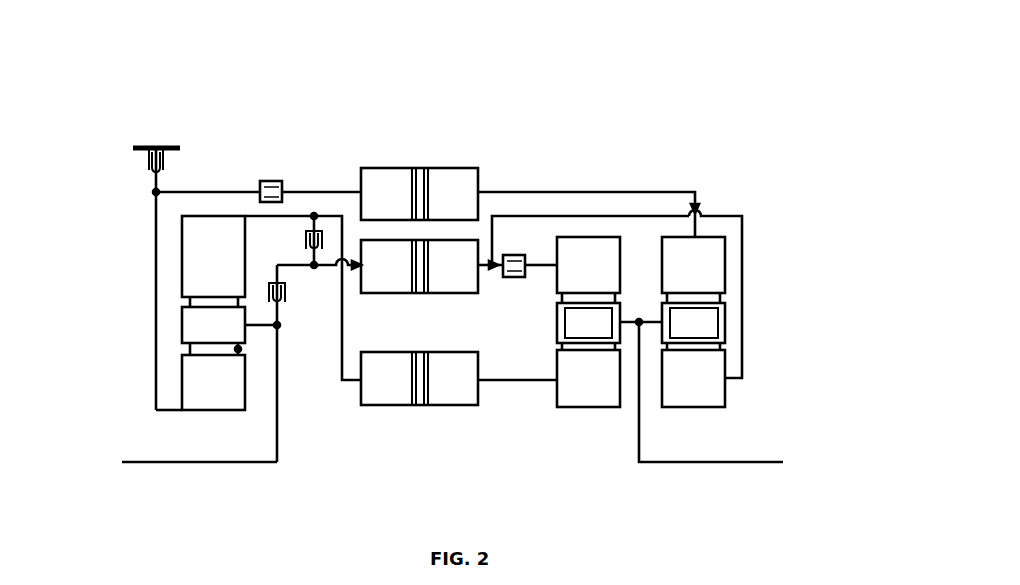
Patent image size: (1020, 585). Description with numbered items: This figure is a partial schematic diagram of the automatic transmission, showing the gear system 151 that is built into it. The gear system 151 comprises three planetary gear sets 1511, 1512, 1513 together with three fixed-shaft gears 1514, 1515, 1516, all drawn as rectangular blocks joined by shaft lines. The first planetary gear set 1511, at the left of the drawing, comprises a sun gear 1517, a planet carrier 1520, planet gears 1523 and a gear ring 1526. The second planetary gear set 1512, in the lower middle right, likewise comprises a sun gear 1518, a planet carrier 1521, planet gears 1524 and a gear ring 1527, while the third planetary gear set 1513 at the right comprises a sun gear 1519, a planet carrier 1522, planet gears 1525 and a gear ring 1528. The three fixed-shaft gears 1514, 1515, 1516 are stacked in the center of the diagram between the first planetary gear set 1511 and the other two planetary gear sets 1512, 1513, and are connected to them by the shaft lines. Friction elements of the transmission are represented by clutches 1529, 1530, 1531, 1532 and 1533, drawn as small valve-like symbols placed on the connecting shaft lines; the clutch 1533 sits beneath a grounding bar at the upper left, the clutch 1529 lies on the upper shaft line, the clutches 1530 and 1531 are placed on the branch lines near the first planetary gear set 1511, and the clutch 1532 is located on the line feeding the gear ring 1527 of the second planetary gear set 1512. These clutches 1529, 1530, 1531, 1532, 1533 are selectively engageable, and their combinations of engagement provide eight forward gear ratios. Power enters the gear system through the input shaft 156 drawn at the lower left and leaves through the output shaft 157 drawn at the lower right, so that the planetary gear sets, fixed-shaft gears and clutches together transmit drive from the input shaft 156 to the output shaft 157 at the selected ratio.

The gear system 151 is at (446, 269).
The clutch 1533 is at (135, 180).
The gear ring 1526 is at (449, 261).
The clutch 1529 is at (283, 157).
The clutch 1530 is at (287, 242).
The clutch 1531 is at (301, 363).
The clutch 1532 is at (526, 250).
The fixed-shaft gear 1514 is at (419, 161).
The fixed-shaft gear 1515 is at (420, 291).
The fixed-shaft gear 1516 is at (419, 410).
The planetary gear set 1511 is at (214, 336).
The planet carrier 1520 is at (187, 279).
The planet gear 1523 is at (260, 342).
The sun gear 1517 is at (205, 406).
The input shaft 156 is at (187, 485).
The planetary gear set 1512 is at (548, 302).
The gear ring 1527 is at (588, 207).
The planet carrier 1521 is at (548, 318).
The planet gear 1524 is at (551, 355).
The sun gear 1518 is at (559, 395).
The planetary gear set 1513 is at (738, 287).
The gear ring 1528 is at (705, 207).
The planet gear 1525 is at (745, 318).
The planet carrier 1522 is at (740, 334).
The sun gear 1519 is at (686, 402).
The output shaft 157 is at (701, 415).